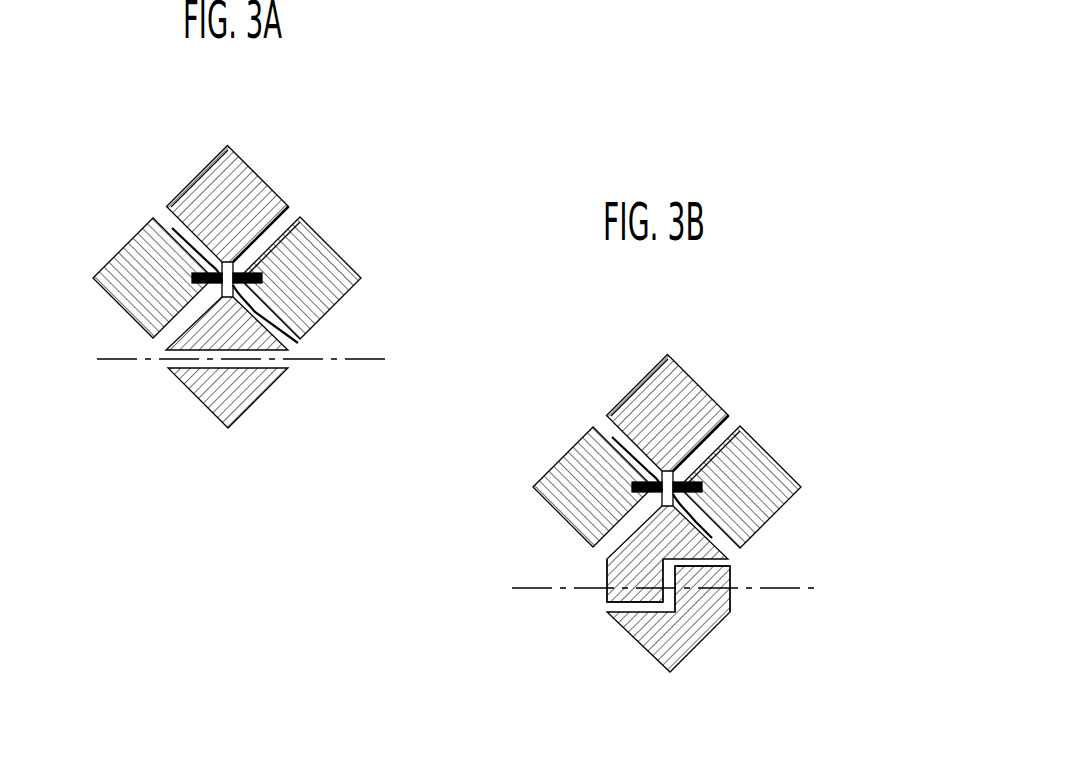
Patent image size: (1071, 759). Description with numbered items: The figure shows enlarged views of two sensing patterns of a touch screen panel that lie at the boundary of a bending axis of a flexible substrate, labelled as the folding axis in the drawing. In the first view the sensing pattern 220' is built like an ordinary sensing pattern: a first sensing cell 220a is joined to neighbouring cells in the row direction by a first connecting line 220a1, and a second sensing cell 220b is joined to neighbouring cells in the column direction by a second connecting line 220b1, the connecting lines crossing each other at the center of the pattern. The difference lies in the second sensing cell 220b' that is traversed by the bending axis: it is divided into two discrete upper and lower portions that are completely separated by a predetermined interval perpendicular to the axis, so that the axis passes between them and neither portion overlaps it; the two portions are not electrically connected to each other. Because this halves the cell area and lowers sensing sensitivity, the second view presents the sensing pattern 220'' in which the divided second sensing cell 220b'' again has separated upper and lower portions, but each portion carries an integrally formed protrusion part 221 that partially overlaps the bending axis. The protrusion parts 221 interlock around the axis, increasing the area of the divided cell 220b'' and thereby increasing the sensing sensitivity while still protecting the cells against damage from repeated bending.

In FIG. 3A, the sensing pattern 220' is at (226, 272).
In FIG. 3B, the sensing pattern 220'' is at (656, 498).
In FIG. 3A, the first sensing cell 220a is at (328, 255).
In FIG. 3B, the first sensing cell 220a is at (768, 464).
In FIG. 3A, the first connecting line 220a1 is at (298, 343).
In FIG. 3B, the first connecting line 220a1 is at (712, 538).
In FIG. 3A, the second sensing cell 220b is at (255, 204).
In FIG. 3B, the second sensing cell 220b is at (696, 413).
In FIG. 3A, the second connecting line 220b1 is at (172, 228).
In FIG. 3B, the second connecting line 220b1 is at (612, 437).
In FIG. 3A, the second sensing cell 220b' is at (200, 392).
In FIG. 3B, the second sensing cell 220b'' is at (600, 618).
In FIG. 3B, the protrusion part 221 is at (620, 595).